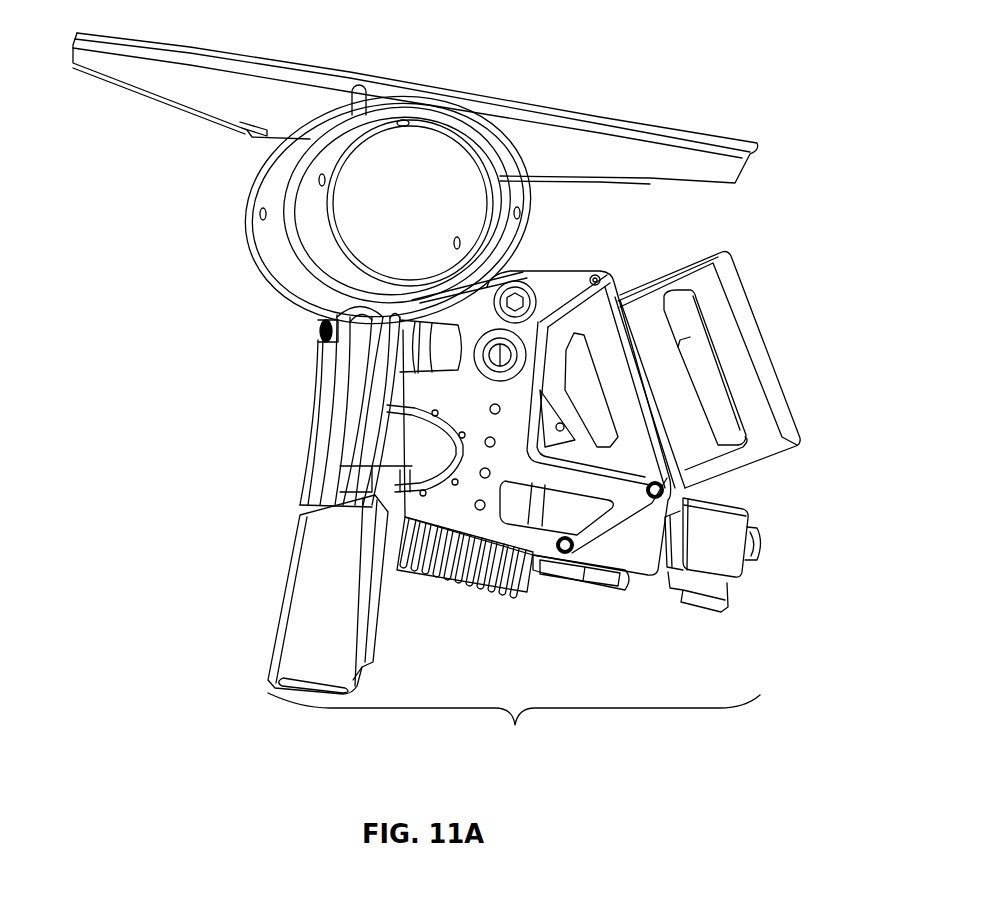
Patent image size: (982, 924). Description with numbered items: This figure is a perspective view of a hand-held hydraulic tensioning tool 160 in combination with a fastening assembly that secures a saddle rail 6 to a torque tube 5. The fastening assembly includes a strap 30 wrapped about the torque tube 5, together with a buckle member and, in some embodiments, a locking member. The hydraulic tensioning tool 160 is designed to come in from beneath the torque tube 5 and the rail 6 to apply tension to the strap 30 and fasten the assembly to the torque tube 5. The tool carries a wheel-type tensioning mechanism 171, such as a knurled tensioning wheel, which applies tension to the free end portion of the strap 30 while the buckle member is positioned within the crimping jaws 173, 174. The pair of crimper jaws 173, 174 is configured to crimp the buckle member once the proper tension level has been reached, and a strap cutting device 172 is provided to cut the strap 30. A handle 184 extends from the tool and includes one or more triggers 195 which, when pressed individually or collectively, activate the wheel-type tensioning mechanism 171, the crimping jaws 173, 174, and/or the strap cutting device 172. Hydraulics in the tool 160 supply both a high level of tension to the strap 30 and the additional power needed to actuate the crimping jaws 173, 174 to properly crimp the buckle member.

The saddle rail 6 is at (112, 68).
The torque tube 5 is at (250, 232).
The strap 30 is at (287, 250).
The wheel-type tensioning mechanism 171 is at (515, 272).
The strap cutting device 172 is at (368, 328).
The crimper jaw 173 is at (327, 488).
The crimper jaw 174 is at (408, 567).
The handle 184 is at (786, 306).
The trigger 195 is at (725, 405).
The hydraulic tensioning tool 160 is at (514, 728).